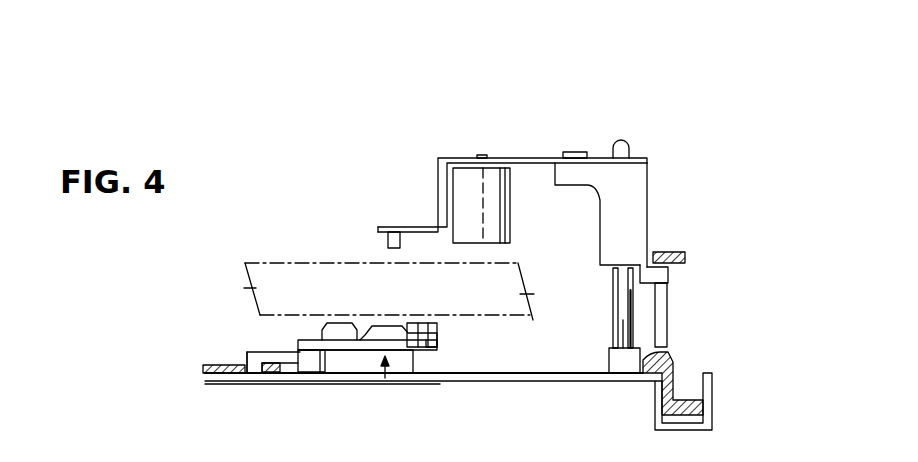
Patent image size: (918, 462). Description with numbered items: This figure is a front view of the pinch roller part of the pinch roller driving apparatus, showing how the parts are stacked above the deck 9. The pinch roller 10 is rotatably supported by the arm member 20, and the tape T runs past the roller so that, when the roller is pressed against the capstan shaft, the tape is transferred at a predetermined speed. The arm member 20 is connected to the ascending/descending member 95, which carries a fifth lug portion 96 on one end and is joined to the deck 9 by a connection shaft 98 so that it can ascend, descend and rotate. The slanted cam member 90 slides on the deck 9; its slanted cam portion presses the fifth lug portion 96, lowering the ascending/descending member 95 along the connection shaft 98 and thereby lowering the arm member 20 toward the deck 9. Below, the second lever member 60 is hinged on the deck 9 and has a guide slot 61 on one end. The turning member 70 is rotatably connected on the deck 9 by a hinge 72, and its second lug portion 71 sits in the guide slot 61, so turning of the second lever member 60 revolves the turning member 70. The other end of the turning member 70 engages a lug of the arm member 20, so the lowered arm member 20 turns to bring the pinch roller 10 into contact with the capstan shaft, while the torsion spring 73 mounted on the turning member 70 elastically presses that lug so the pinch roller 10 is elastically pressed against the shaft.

The deck 9 is at (557, 384).
The pinch roller 10 is at (468, 205).
The arm member 20 is at (542, 160).
The second lever member 60 is at (228, 375).
The guide slot 61 is at (245, 352).
The turning member 70 is at (385, 378).
The second lug portion 71 is at (258, 375).
The hinge 72 is at (308, 315).
The torsion spring 73 is at (410, 352).
The slanted cam member 90 is at (682, 249).
The ascending/descending member 95 is at (647, 190).
The fifth lug portion 96 is at (670, 273).
The connection shaft 98 is at (623, 320).
The tape T is at (358, 282).